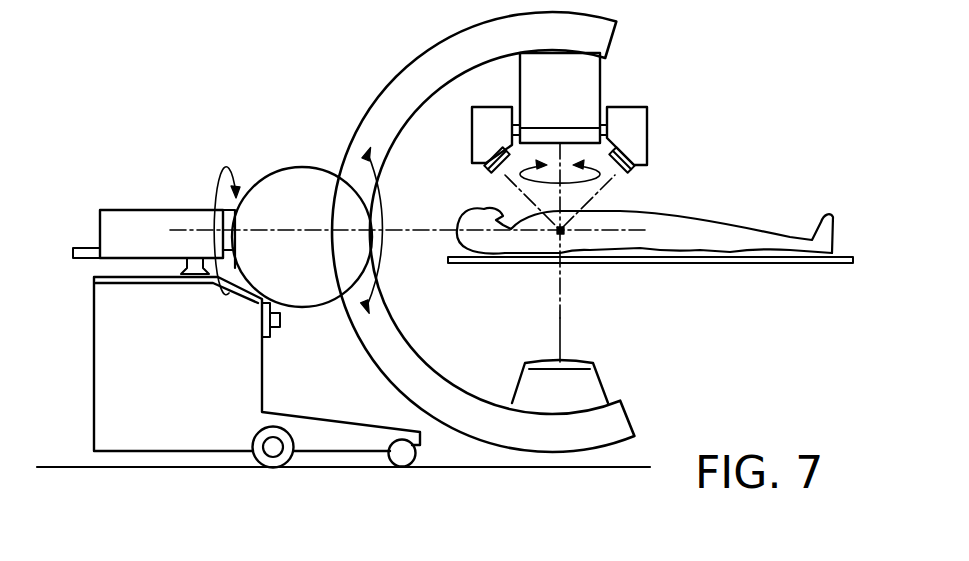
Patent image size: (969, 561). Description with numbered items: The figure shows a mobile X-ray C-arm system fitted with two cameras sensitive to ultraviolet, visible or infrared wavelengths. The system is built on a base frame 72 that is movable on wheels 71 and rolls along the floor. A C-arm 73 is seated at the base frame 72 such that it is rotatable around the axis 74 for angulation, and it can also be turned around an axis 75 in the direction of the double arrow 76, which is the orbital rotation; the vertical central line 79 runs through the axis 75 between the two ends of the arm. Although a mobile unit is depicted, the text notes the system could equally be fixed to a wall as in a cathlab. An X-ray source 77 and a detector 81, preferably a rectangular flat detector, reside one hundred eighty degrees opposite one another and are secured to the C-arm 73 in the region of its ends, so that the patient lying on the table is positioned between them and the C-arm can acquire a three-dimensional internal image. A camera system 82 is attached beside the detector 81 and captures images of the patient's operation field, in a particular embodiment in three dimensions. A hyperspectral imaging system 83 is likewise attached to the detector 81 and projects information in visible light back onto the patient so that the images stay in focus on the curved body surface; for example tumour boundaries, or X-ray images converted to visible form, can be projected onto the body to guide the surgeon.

The wheels 71 is at (273, 456).
The base frame 72 is at (122, 372).
The C-arm 73 is at (413, 82).
The axis 74 is at (183, 228).
The axis 75 is at (556, 237).
The double arrow 76 is at (360, 266).
The X-ray source 77 is at (588, 382).
The central beam axis 79 is at (562, 308).
The detector 81 is at (558, 135).
The camera system 82 is at (640, 128).
The hyperspectral imaging system 83 is at (483, 135).